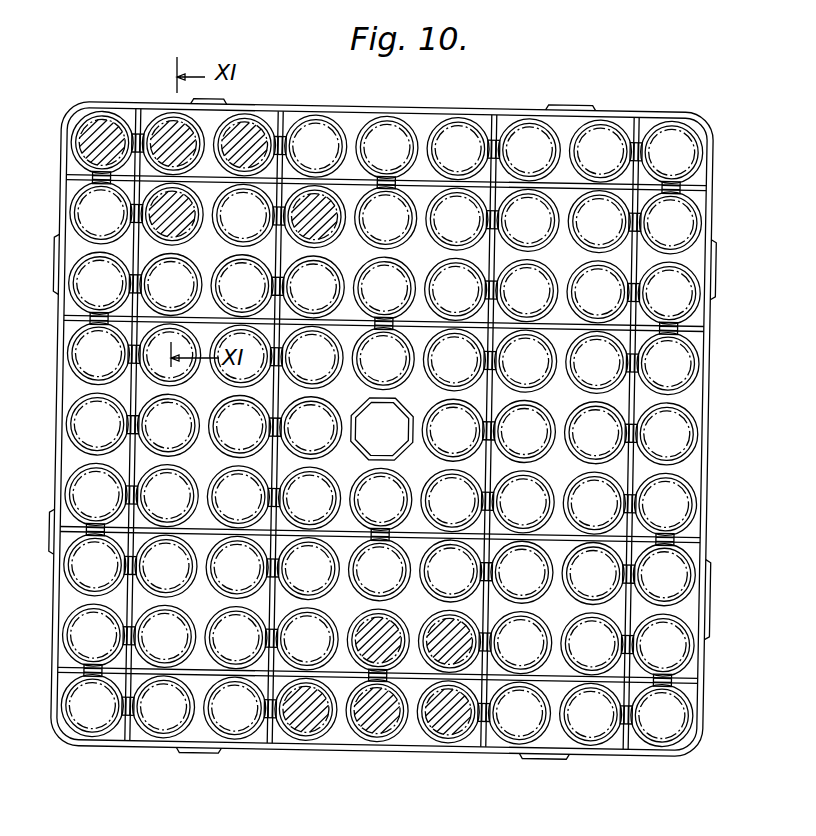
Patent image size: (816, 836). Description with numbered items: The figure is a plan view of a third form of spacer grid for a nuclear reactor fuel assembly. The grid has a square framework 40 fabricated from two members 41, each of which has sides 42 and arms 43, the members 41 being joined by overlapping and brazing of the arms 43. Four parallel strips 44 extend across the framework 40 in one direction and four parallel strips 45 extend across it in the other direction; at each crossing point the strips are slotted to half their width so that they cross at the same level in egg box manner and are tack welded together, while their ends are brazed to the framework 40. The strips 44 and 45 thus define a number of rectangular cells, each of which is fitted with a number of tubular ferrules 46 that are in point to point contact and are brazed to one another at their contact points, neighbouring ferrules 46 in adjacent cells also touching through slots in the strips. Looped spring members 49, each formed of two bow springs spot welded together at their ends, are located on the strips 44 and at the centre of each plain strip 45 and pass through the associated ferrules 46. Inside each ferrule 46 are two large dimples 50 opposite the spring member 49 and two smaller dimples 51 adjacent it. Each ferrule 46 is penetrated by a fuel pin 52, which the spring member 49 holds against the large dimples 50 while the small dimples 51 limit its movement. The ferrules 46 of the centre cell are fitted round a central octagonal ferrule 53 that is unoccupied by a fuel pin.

The square framework 40 is at (397, 752).
The member 41 is at (500, 112).
The side 42 is at (706, 226).
The arm 43 is at (268, 750).
The strip 44 is at (352, 168).
The strip 45 is at (47, 692).
The tubular ferrule 46 is at (228, 112).
The looped spring member 49 is at (388, 190).
The large dimple 50 is at (86, 115).
The small dimple 51 is at (123, 118).
The fuel pin 52 is at (105, 120).
The central octagonal ferrule 53 is at (428, 392).